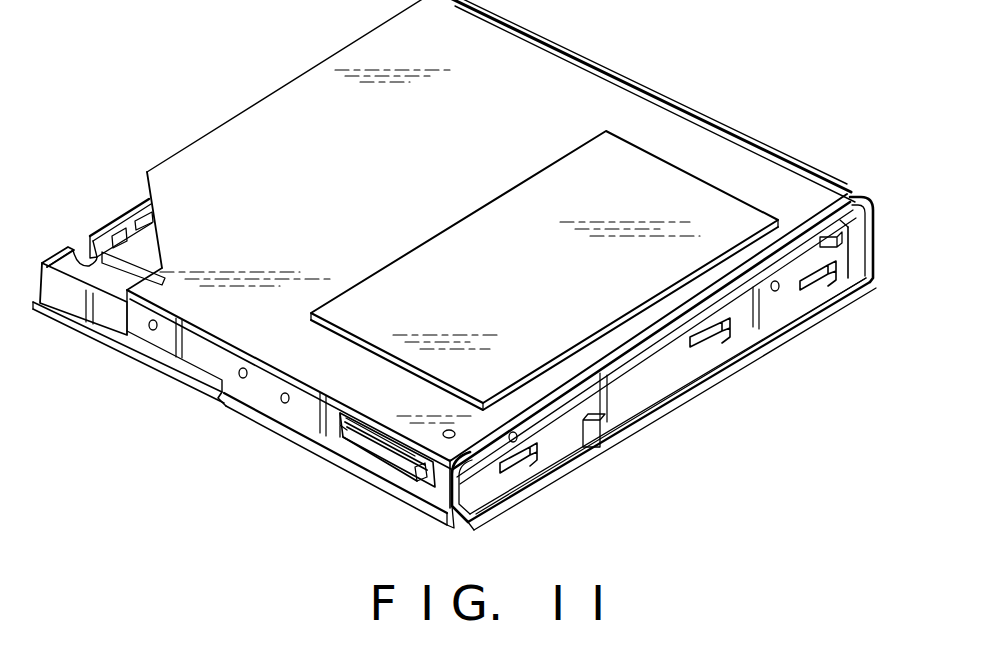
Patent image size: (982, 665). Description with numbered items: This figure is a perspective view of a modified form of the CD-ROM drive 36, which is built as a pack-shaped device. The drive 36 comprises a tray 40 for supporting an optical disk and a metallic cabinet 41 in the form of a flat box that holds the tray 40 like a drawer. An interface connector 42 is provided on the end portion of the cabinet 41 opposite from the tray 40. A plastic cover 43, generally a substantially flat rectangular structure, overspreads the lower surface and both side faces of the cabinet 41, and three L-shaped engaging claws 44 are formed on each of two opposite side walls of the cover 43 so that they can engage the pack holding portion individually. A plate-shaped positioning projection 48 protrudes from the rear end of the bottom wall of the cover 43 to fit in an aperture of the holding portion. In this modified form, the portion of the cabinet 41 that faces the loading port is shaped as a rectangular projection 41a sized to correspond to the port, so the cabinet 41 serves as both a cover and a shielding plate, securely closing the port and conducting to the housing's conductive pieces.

The CD-ROM drive 36 is at (255, 138).
The tray 40 is at (810, 173).
The metallic cabinet 41 is at (612, 108).
The rectangular projection 41a is at (477, 233).
The interface connector 42 is at (378, 465).
The plastic cover 43 is at (633, 377).
The engaging claws 44 is at (523, 450).
The positioning projection 48 is at (267, 437).